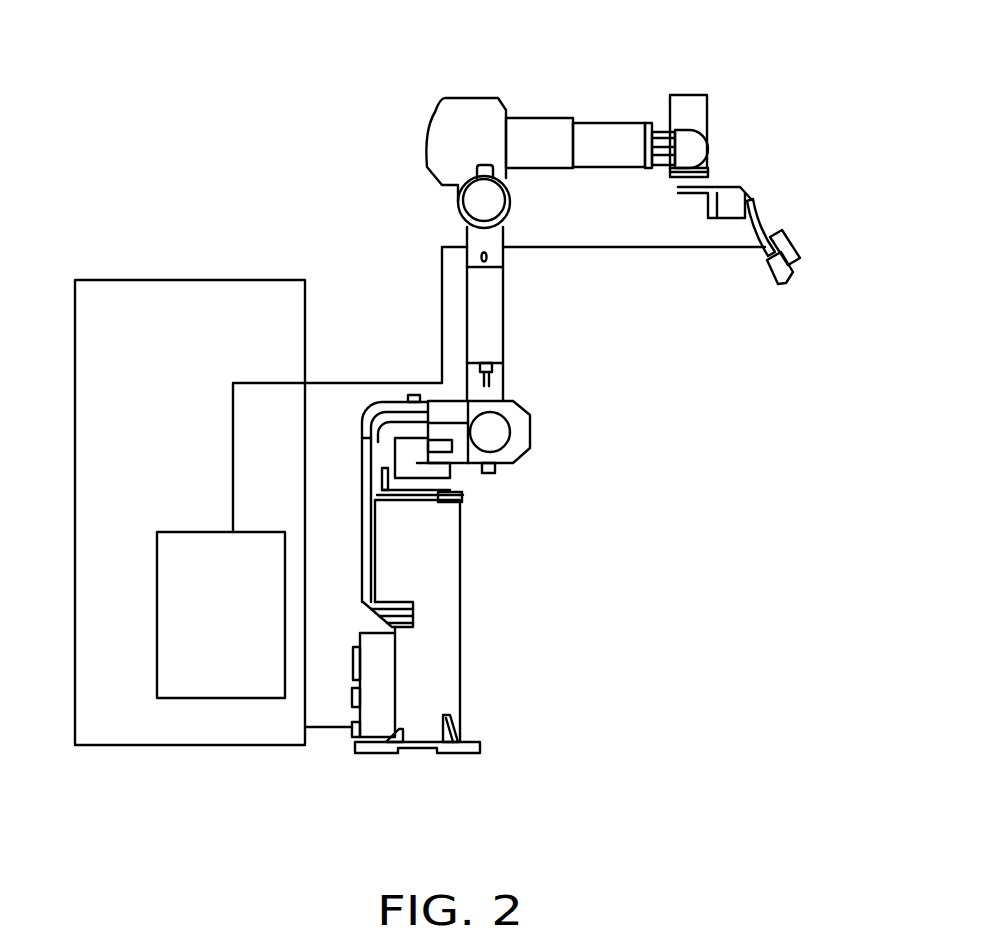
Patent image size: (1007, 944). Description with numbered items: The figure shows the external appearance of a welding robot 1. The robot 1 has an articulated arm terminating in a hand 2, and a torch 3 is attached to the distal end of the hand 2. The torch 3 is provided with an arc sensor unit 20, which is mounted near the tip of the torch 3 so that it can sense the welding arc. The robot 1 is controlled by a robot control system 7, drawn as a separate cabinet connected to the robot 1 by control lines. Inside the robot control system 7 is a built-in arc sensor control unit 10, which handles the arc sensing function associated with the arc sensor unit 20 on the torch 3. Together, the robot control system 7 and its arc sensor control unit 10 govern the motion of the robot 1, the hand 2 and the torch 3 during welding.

The robot 1 is at (472, 97).
The hand 2 is at (720, 163).
The torch 3 is at (757, 213).
The arc sensor unit 20 is at (797, 243).
The robot control system 7 is at (87, 280).
The arc sensor control unit 10 is at (257, 532).